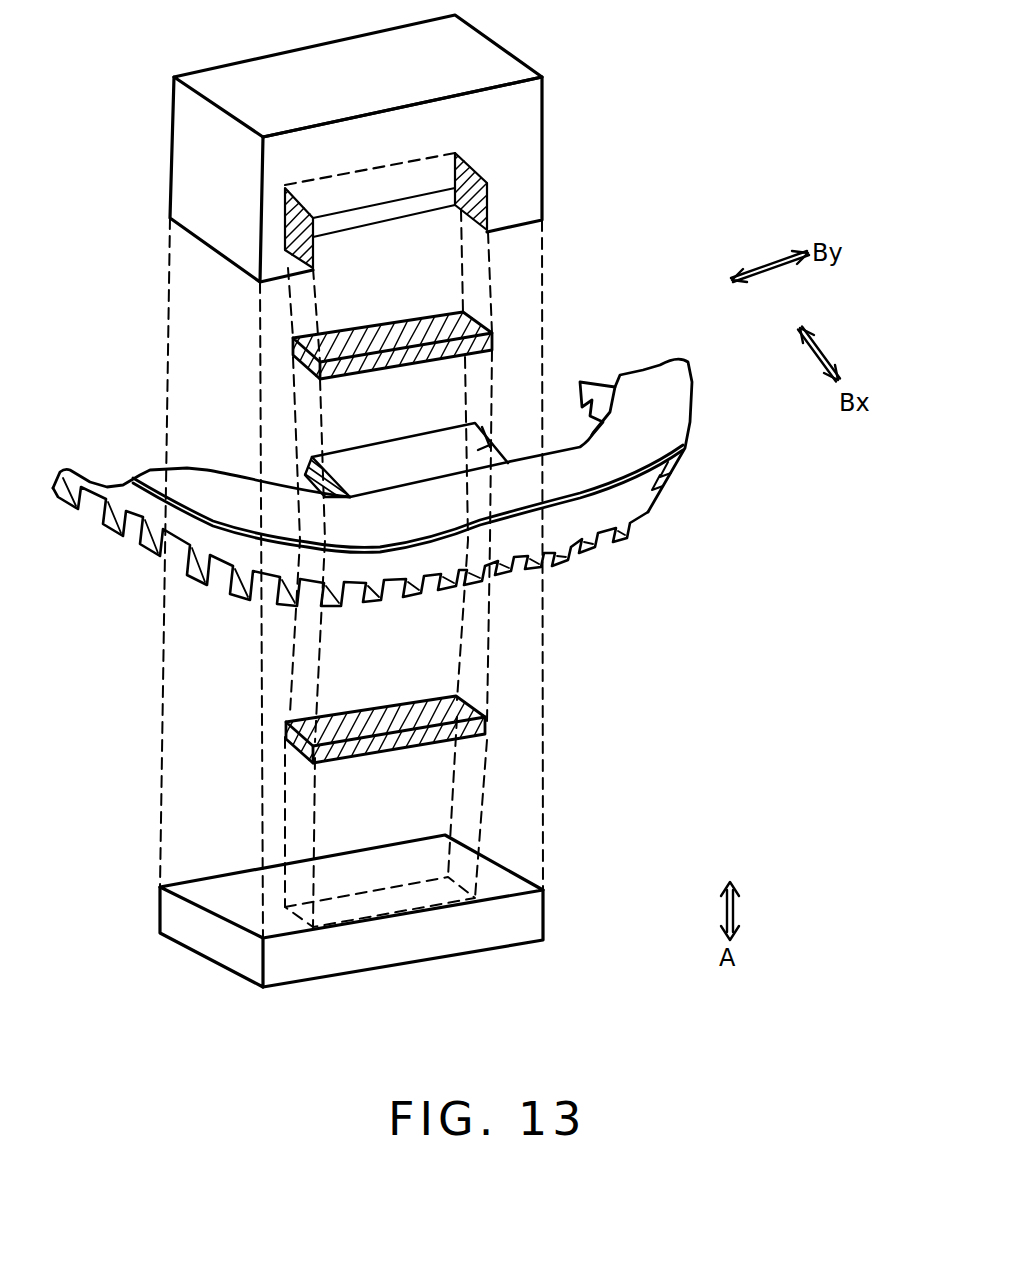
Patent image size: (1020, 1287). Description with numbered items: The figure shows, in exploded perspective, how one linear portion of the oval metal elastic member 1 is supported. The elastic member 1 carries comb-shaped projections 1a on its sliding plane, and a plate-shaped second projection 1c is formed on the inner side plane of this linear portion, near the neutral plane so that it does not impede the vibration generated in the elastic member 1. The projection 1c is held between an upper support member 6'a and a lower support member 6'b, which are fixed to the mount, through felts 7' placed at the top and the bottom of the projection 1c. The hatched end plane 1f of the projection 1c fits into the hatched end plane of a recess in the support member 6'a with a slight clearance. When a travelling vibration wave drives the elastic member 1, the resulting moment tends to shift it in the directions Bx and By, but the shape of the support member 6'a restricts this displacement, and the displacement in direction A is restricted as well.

The elastic member 1 is at (672, 470).
The comb-shaped projections 1a is at (605, 543).
The second projection 1c is at (478, 452).
The hatched end plane 1f is at (305, 470).
The support member 6'a is at (381, 148).
The support member 6'b is at (383, 907).
The felt 7' is at (406, 517).